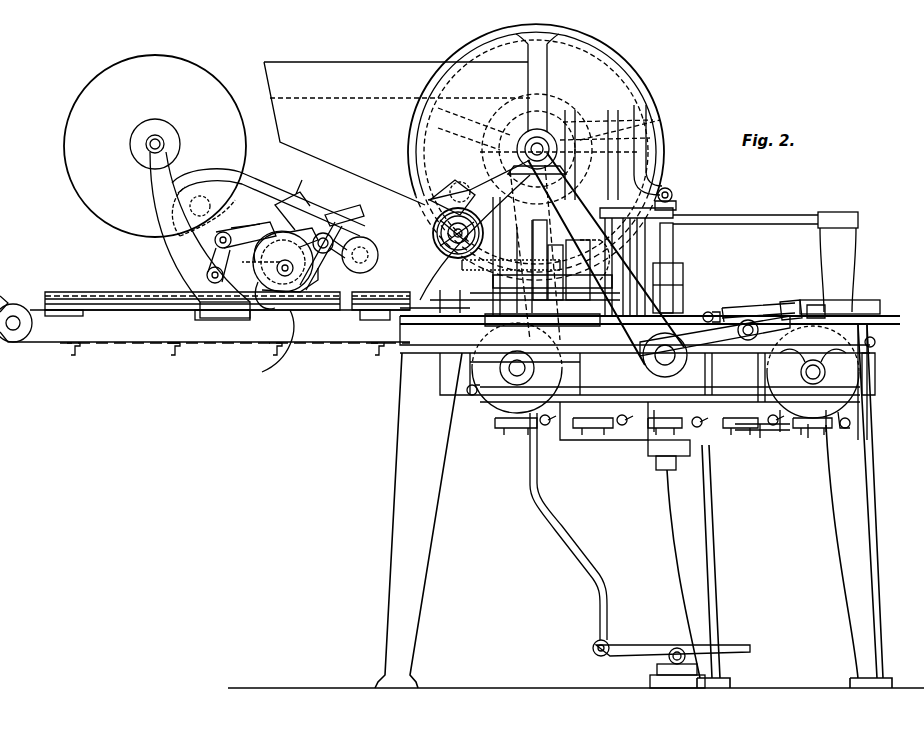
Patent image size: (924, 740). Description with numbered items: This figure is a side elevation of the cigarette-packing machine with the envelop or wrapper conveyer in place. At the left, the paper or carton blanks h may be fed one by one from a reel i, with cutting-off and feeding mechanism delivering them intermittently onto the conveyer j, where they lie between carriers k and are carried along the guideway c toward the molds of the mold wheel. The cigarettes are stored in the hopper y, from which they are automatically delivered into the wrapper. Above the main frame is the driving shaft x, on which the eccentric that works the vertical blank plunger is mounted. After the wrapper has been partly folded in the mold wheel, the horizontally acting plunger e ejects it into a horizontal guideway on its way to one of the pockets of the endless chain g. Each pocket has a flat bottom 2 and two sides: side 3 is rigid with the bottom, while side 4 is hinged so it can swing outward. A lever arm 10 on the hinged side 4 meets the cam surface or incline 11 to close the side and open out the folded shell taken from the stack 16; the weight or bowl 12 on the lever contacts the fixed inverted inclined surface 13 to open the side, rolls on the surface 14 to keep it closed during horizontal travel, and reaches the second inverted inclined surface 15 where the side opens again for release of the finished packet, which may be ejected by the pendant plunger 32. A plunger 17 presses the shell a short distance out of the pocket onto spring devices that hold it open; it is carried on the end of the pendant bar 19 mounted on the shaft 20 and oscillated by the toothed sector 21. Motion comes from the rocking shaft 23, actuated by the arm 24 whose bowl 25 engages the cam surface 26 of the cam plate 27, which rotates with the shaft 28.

The flat bottom 2 is at (750, 314).
The vertical side 3 is at (782, 312).
The hinged side 4 is at (723, 310).
The lever arm 10 is at (716, 310).
The cam surface or incline 11 is at (560, 360).
The weight or bowl 12 is at (708, 312).
The fixed inverted inclined surface 13 is at (488, 320).
The surface 14 is at (690, 312).
The second inverted inclined surface 15 is at (740, 318).
The stack 16 is at (600, 142).
The plunger 17 is at (648, 350).
The pendant bar 19 is at (673, 244).
The shaft 20 is at (556, 262).
The toothed sector 21 is at (672, 213).
The rocking shaft 23 is at (470, 297).
The arm 24 is at (493, 281).
The bowl 25 is at (436, 226).
The cam surface 26 is at (448, 246).
The cam plate 27 is at (440, 296).
The shaft 28 is at (440, 238).
The pendant plunger 32 is at (812, 304).
The guideway c is at (62, 298).
The horizontally acting plunger e is at (606, 296).
The endless chain g is at (663, 550).
The envelop or wrapper blank h is at (232, 236).
The reel i is at (66, 135).
The conveyer j is at (103, 345).
The carriers k is at (305, 298).
The driving shaft x is at (542, 142).
The hopper y is at (397, 133).